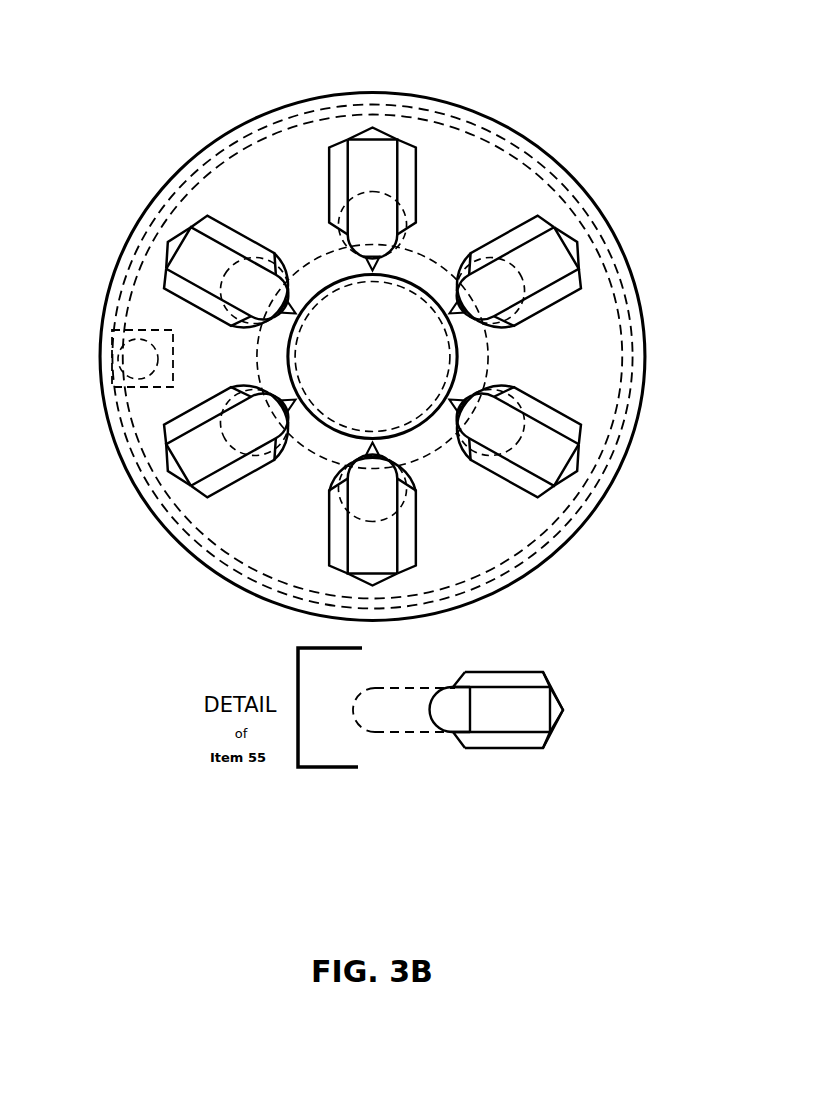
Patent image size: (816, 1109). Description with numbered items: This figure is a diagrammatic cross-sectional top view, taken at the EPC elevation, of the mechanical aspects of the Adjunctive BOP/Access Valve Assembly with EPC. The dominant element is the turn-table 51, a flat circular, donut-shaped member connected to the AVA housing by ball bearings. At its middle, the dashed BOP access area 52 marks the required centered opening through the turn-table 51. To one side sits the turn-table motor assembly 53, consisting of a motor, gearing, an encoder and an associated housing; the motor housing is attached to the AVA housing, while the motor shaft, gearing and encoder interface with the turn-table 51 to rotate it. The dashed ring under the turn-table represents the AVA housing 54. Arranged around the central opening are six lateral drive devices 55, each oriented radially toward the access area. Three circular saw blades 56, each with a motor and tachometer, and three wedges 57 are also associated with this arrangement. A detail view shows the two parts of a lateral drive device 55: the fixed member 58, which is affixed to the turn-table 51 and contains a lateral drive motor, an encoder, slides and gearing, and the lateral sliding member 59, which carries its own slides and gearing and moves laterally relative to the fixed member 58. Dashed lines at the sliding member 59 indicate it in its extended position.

The turn-table 51 is at (510, 216).
The BOP access area 52 is at (306, 363).
The turn-table motor assembly 53 is at (146, 324).
The AVA housing 54 is at (314, 452).
The lateral drive device 55 is at (363, 184).
The circular saw blade 56 is at (509, 332).
The wedge 57 is at (463, 391).
The fixed member 58 is at (539, 756).
The lateral sliding member 59 is at (464, 712).